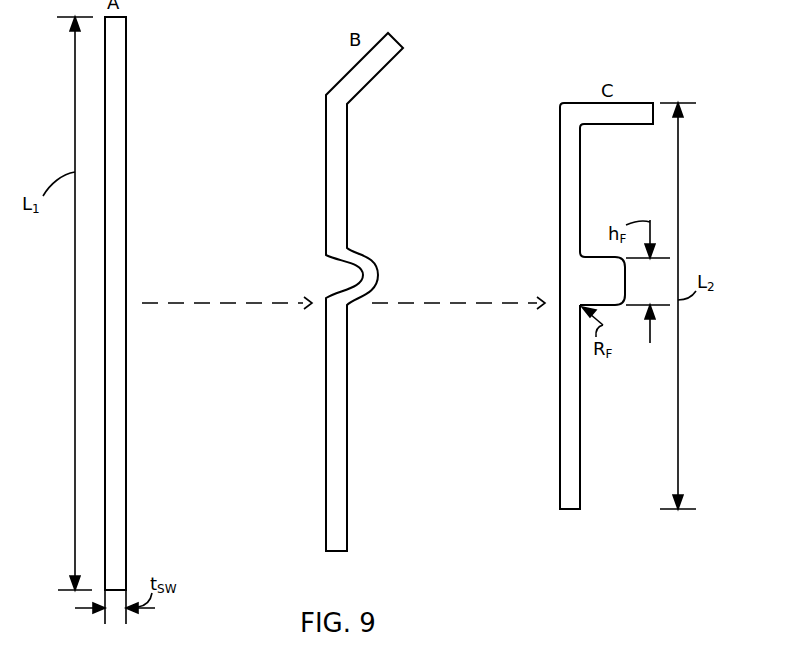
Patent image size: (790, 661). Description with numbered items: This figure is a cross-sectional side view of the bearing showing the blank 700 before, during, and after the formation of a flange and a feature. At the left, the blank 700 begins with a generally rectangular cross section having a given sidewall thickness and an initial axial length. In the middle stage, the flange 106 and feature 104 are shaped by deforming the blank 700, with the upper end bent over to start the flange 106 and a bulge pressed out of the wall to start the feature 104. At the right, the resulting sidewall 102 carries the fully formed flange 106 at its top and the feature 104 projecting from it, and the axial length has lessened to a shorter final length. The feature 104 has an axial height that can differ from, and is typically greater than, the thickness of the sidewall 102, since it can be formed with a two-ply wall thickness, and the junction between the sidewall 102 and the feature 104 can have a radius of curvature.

The blank 700 is at (126, 126).
The flange 106 is at (579, 112).
The feature 104 is at (612, 283).
The sidewall 102 is at (560, 393).